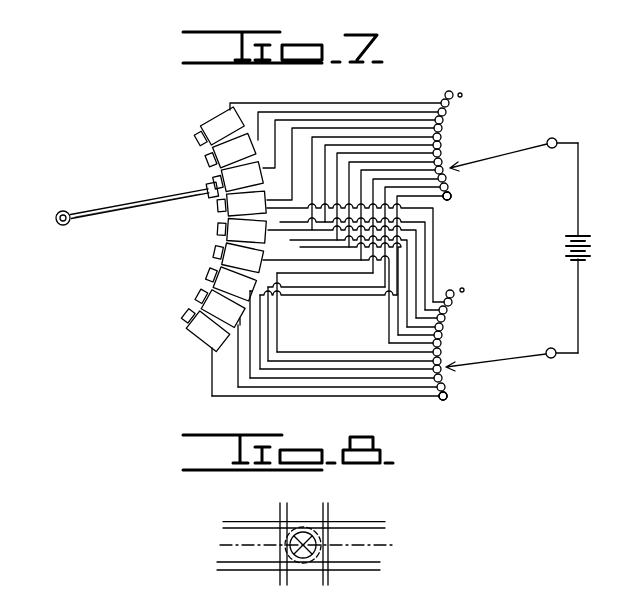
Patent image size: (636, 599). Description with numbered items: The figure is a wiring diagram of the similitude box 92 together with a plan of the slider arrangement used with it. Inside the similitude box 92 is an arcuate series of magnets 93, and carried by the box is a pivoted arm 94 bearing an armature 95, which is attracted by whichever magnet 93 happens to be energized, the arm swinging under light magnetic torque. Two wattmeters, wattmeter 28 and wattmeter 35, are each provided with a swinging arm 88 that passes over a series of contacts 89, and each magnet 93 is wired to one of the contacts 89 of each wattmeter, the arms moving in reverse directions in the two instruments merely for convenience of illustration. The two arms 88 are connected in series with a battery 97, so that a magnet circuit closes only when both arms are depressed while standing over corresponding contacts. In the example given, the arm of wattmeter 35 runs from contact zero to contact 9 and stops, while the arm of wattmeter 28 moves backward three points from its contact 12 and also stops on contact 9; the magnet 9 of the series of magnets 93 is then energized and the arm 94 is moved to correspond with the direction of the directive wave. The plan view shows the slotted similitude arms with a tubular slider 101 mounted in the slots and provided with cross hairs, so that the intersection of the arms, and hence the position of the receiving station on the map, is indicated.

In FIG. 7, the magnets 93 is at (214, 278).
In FIG. 7, the arm 94 is at (156, 202).
In FIG. 8, the arm 94 is at (327, 517).
In FIG. 7, the armature 95 is at (210, 196).
In FIG. 7, the similitude box 92 is at (137, 222).
In FIG. 7, the wattmeter 28 is at (463, 145).
In FIG. 7, the wattmeter 35 is at (486, 380).
In FIG. 7, the swinging arm 88 is at (506, 160).
In FIG. 7, the contacts 89 is at (451, 194).
In FIG. 7, the contact 12 is at (455, 201).
In FIG. 7, the battery 97 is at (592, 256).
In FIG. 8, the slider 101 is at (317, 552).
In FIG. 8, the contact 9 is at (306, 546).